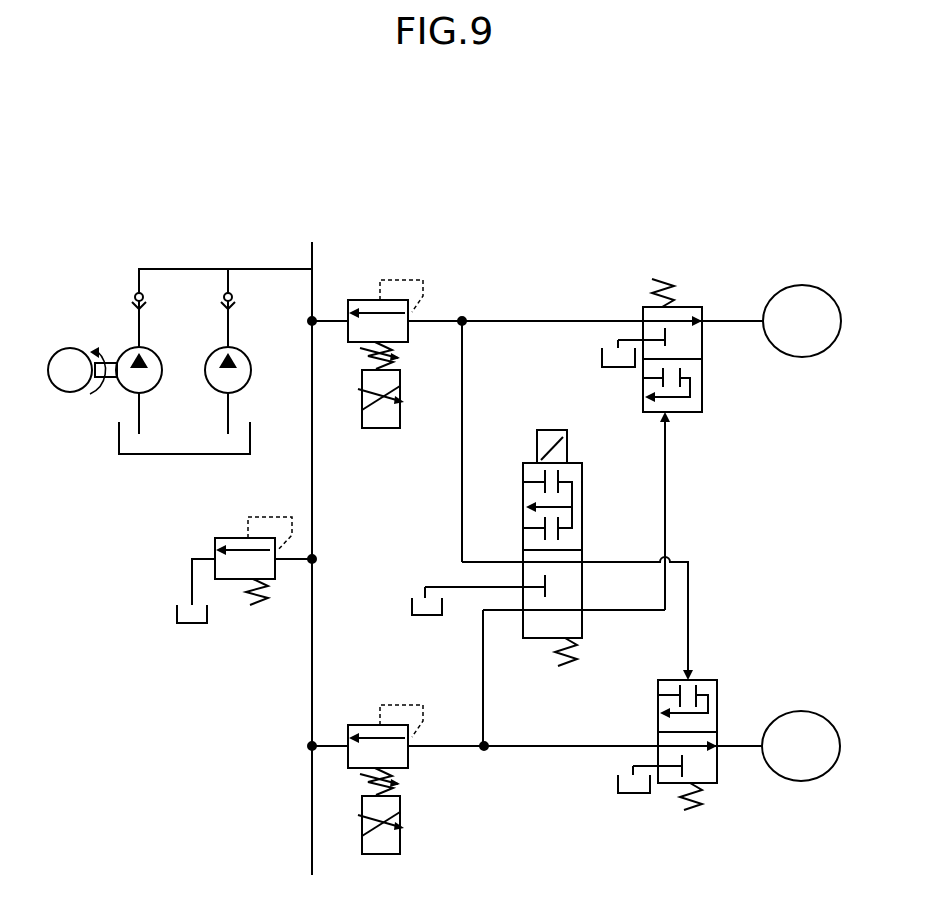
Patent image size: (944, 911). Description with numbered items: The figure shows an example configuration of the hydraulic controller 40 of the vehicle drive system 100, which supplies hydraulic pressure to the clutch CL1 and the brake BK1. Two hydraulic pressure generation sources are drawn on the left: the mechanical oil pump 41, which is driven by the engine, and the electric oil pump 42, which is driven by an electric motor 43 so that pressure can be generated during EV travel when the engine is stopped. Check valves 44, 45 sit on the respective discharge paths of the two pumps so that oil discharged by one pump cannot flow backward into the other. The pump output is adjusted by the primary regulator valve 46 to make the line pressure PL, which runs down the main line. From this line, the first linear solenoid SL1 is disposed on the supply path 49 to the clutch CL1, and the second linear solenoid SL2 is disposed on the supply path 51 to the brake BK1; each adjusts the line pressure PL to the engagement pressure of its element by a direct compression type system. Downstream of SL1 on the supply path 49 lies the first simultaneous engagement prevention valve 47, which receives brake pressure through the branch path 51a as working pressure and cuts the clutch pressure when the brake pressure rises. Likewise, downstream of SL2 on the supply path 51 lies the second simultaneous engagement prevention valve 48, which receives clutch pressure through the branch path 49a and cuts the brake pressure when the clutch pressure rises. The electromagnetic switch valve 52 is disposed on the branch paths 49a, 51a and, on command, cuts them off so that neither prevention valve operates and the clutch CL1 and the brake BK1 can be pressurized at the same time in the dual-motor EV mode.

The vehicle drive device 100 is at (168, 153).
The hydraulic controller 40 is at (218, 209).
The mechanical oil pump 41 is at (246, 351).
The electric oil pump 42 is at (154, 351).
The electric motor 43 is at (70, 348).
The check valve 44 is at (236, 297).
The check valve 45 is at (148, 297).
The primary regulator valve 46 is at (232, 537).
The first simultaneous engagement prevention valve 47 is at (686, 305).
The second simultaneous engagement prevention valve 48 is at (712, 791).
The supply path 49 is at (524, 318).
The branch path 49a is at (467, 352).
The supply path 51 is at (538, 750).
The branch path 51a is at (487, 702).
The electromagnetic switch valve 52 is at (524, 463).
The first linear solenoid SL1 is at (362, 300).
The second linear solenoid SL2 is at (363, 724).
The line pressure PL is at (227, 556).
The clutch CL1 is at (802, 321).
The brake BK1 is at (801, 746).